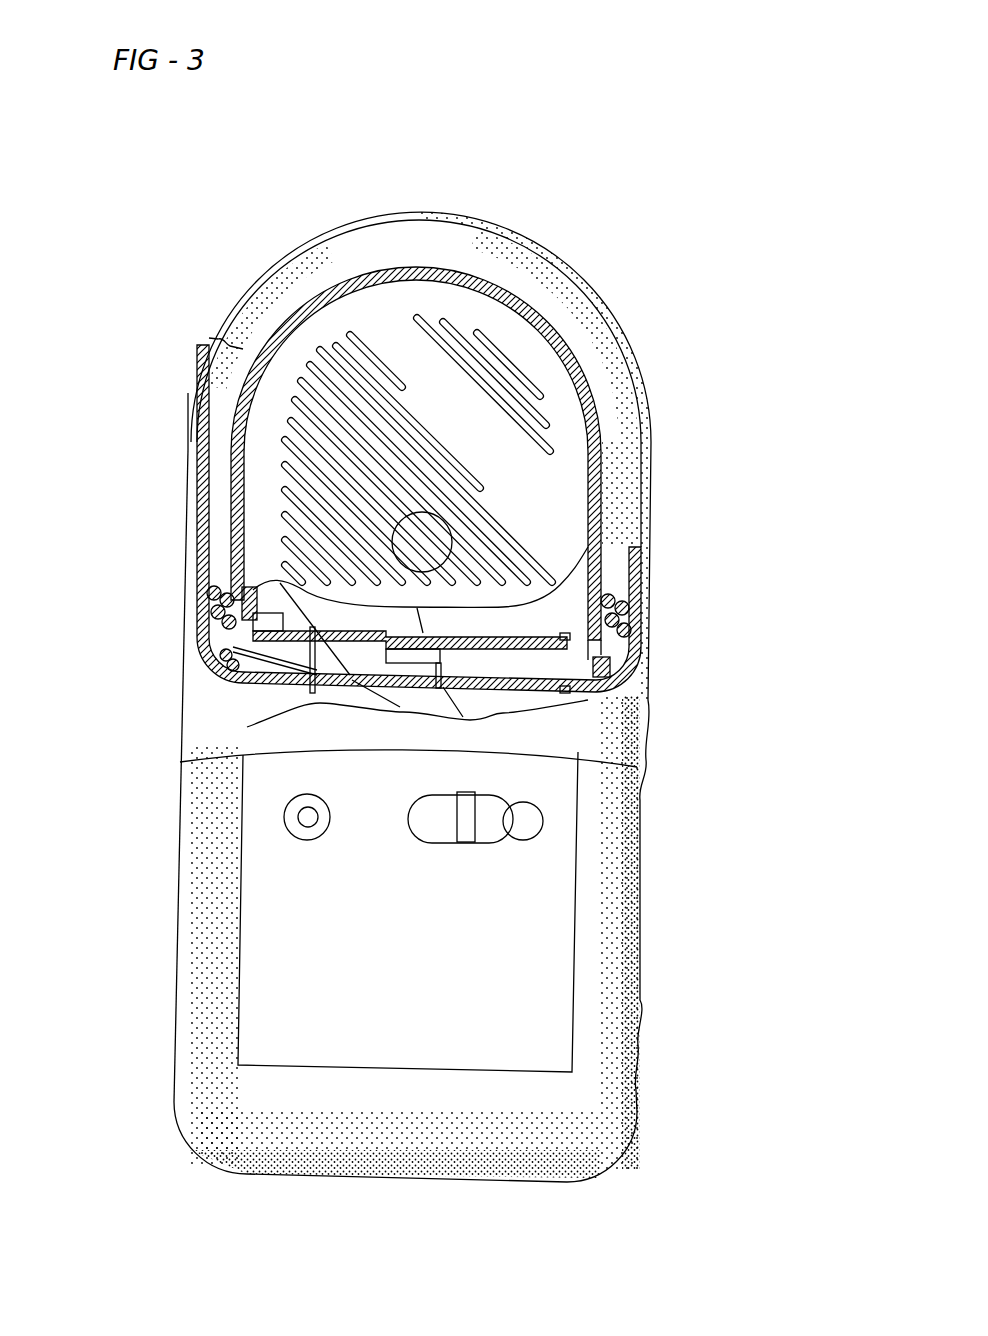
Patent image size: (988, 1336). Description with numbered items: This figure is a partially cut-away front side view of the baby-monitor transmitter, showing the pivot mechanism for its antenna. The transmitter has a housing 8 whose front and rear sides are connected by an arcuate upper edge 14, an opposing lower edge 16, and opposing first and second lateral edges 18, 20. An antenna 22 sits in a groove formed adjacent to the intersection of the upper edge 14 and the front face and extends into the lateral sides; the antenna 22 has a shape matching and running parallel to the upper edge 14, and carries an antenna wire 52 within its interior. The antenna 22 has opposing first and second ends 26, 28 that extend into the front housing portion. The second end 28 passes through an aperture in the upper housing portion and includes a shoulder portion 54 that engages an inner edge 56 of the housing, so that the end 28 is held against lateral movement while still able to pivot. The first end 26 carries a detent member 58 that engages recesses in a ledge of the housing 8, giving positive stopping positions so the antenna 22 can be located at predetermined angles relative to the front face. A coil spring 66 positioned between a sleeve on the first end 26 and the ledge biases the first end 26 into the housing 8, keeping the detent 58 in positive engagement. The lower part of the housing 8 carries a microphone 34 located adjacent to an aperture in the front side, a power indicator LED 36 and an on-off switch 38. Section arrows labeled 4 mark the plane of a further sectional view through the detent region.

The housing 8 is at (624, 1166).
The upper edge 14 is at (367, 214).
The lower edge 16 is at (463, 1173).
The first lateral edge 18 is at (172, 935).
The second lateral edge 20 is at (645, 935).
The antenna 22 is at (196, 395).
The first end 26 is at (235, 665).
The second end 28 is at (647, 698).
The microphone 34 is at (640, 592).
The power indicator LED 36 is at (303, 815).
The on-off switch 38 is at (503, 820).
The antenna wire 52 is at (570, 606).
The shoulder portion 54 is at (645, 665).
The inner edge 56 is at (643, 650).
The detent member 58 is at (215, 638).
The coil spring 66 is at (262, 572).
The section line 4- 4 is at (645, 580).